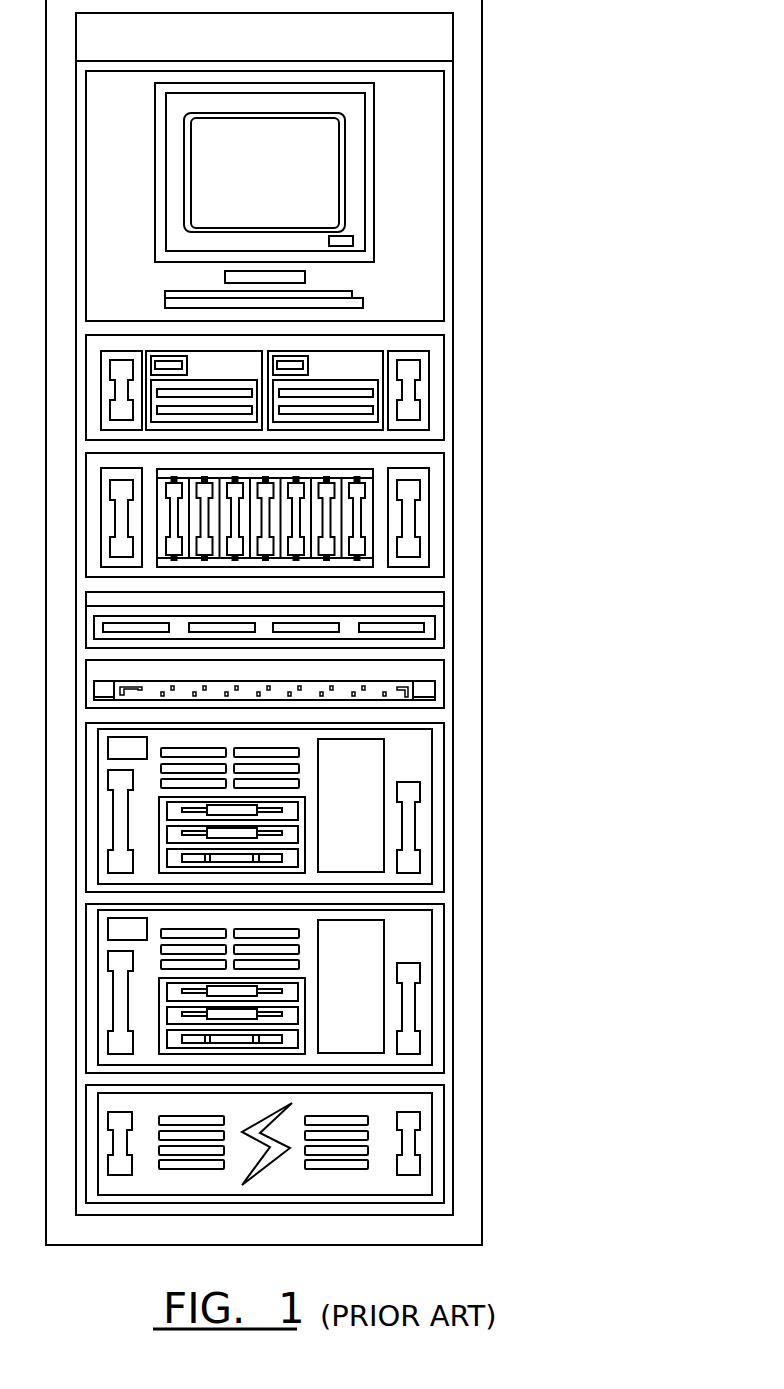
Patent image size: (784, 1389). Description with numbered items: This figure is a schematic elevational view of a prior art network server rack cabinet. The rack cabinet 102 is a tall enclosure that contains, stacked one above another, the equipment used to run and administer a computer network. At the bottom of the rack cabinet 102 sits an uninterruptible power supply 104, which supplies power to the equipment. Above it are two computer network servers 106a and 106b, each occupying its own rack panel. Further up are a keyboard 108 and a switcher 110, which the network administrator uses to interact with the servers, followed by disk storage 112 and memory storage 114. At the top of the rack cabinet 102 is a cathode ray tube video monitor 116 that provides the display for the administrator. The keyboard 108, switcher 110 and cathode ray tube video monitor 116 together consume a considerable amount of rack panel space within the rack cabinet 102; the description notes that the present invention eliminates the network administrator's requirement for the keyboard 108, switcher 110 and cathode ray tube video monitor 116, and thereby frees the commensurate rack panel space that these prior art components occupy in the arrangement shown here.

The rack cabinet 102 is at (482, 857).
The uninterruptible power supply 104 is at (420, 1142).
The computer network server 106a is at (413, 950).
The computer network server 106b is at (413, 766).
The keyboard 108 is at (423, 690).
The switcher 110 is at (423, 623).
The disk storage 112 is at (417, 513).
The memory storage 114 is at (417, 398).
The cathode ray tube video monitor 116 is at (353, 197).